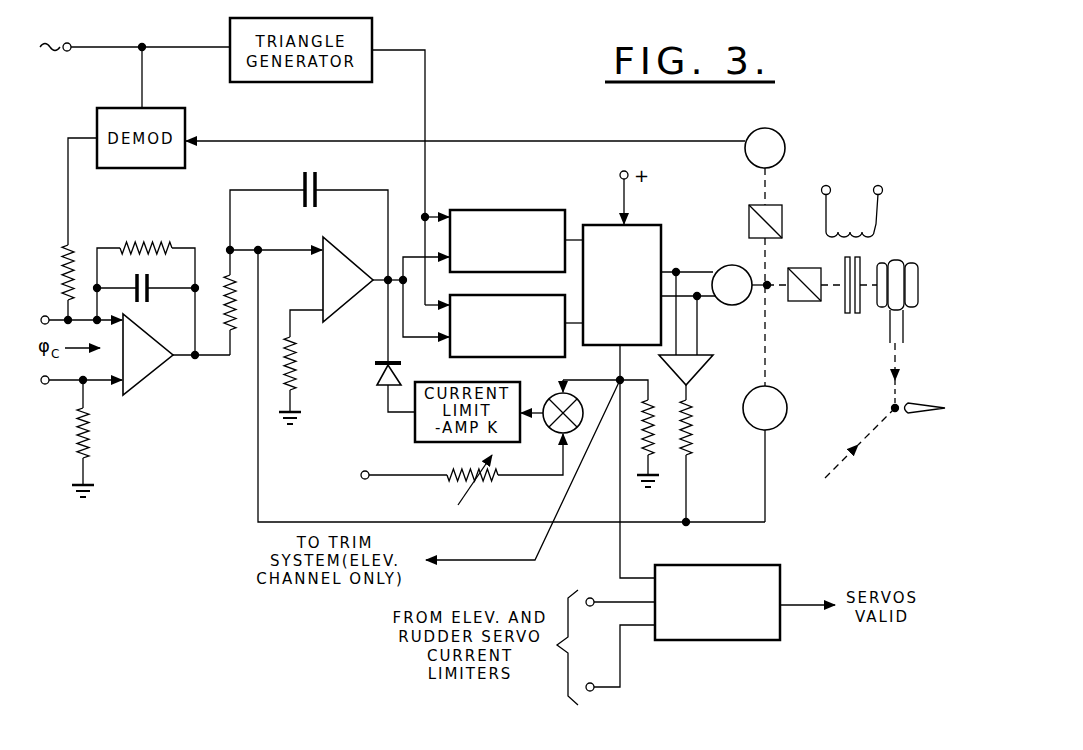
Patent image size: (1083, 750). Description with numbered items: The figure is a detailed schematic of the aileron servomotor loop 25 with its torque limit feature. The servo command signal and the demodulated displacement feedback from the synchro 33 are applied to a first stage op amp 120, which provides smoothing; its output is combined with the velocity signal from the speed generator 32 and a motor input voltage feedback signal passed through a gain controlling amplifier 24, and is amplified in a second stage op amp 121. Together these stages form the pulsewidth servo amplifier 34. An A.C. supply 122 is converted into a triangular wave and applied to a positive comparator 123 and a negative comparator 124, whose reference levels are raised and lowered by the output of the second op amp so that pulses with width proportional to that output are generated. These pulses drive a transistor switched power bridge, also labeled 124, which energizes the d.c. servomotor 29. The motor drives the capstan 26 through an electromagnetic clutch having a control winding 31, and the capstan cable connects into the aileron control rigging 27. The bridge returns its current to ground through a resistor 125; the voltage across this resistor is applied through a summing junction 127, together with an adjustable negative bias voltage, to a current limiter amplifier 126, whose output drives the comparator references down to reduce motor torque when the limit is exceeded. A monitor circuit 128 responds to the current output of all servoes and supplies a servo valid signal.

The aileron servomotor loop 25 is at (499, 112).
The A.C. supply 122 is at (135, 32).
The second stage op amp 121 is at (340, 246).
The first stage op amp 120 is at (150, 383).
The servo amplifier 34 is at (165, 447).
The positive comparator 123 is at (537, 208).
The negative comparator 124 is at (497, 358).
The synchro 33 is at (786, 138).
The control winding 31 is at (883, 216).
The capstan 26 is at (900, 262).
The servomotor 29 is at (731, 305).
The gain controlling amplifier 24 is at (706, 362).
The speed generator 32 is at (783, 395).
The aileron control rigging 27 is at (904, 386).
The current limiter amplifier 126 is at (415, 428).
The summing junction 127 is at (541, 443).
The resistor 125 is at (656, 432).
The monitor circuit 128 is at (712, 642).